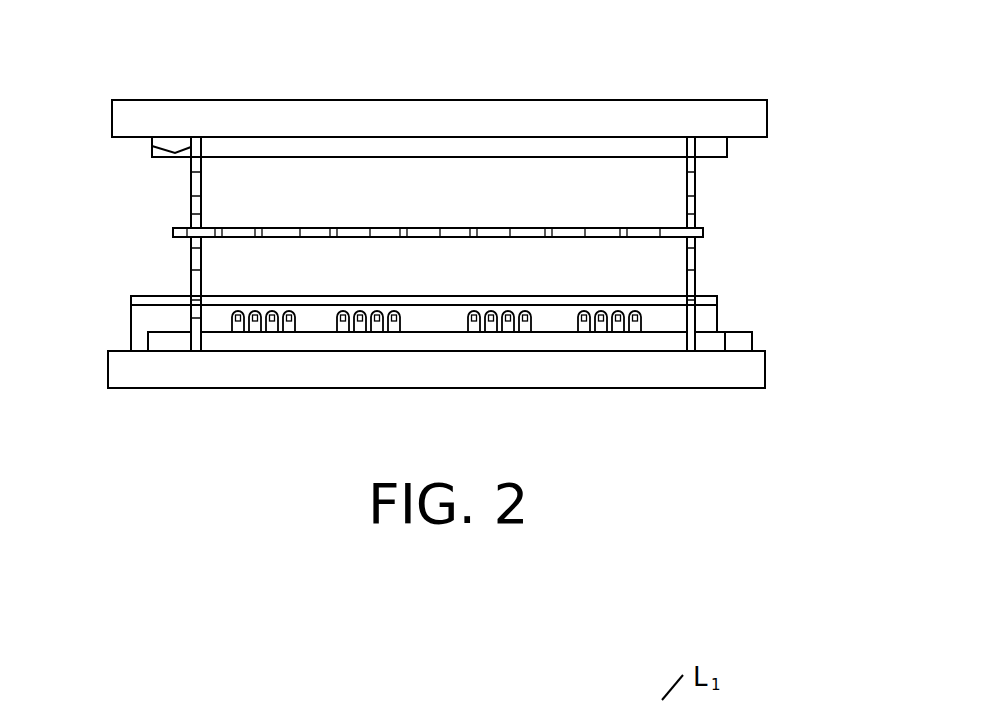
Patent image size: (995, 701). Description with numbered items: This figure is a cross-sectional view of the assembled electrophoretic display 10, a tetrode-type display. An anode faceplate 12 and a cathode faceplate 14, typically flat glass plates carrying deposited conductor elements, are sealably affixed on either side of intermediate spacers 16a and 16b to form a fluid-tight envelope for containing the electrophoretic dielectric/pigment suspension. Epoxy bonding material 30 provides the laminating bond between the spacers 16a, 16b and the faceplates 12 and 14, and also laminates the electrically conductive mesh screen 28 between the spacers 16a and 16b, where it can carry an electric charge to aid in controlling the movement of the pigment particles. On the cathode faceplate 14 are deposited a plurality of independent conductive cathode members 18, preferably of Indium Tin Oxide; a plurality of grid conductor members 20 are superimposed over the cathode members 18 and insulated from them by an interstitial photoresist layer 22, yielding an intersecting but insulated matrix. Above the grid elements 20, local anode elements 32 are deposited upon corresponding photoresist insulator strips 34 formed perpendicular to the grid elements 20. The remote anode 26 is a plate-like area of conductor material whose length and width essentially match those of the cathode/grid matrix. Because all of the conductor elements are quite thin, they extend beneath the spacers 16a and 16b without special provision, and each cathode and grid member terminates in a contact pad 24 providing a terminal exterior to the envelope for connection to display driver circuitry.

The electrophoretic display 10 is at (177, 412).
The anode faceplate 12 is at (748, 122).
The cathode faceplate 14 is at (752, 367).
The intermediate spacer 16a is at (190, 266).
The intermediate spacer 16b is at (192, 194).
The cathode members 18 is at (388, 338).
The grid conductor members 20 is at (582, 315).
The interstitial photoresist layer 22 is at (235, 323).
The contact pad 24 is at (737, 340).
The remote anode 26 is at (563, 147).
The mesh screen 28 is at (455, 225).
The epoxy bonding material 30 is at (190, 318).
The local anode elements 32 is at (424, 164).
The photoresist insulator strips 34 is at (322, 315).